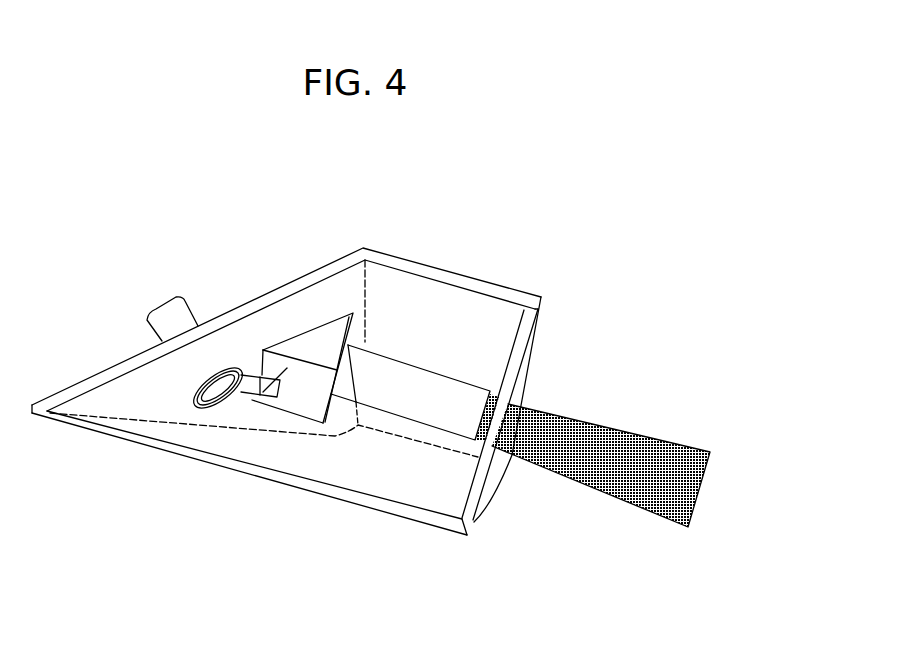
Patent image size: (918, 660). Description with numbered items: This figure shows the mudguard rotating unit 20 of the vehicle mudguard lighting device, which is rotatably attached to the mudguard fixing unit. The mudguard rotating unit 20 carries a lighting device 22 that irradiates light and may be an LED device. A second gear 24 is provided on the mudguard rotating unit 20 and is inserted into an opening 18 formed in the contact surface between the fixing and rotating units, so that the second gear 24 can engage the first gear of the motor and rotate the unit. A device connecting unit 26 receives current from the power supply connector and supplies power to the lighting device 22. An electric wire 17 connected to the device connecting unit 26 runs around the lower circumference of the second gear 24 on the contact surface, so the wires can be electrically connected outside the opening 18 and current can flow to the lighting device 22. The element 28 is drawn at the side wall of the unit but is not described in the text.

The electric wire 17 is at (252, 397).
The opening 18 is at (213, 405).
The mudguard rotating unit 20 is at (403, 478).
The lighting device 22 is at (425, 382).
The second gear 24 is at (163, 311).
The device connecting unit 26 is at (315, 347).
The cover plate 28 is at (498, 470).